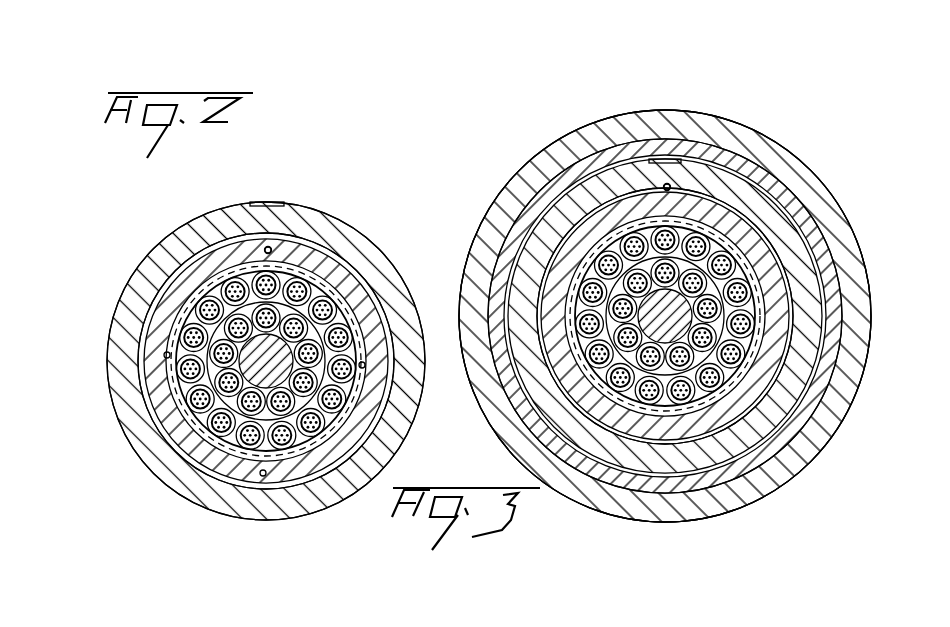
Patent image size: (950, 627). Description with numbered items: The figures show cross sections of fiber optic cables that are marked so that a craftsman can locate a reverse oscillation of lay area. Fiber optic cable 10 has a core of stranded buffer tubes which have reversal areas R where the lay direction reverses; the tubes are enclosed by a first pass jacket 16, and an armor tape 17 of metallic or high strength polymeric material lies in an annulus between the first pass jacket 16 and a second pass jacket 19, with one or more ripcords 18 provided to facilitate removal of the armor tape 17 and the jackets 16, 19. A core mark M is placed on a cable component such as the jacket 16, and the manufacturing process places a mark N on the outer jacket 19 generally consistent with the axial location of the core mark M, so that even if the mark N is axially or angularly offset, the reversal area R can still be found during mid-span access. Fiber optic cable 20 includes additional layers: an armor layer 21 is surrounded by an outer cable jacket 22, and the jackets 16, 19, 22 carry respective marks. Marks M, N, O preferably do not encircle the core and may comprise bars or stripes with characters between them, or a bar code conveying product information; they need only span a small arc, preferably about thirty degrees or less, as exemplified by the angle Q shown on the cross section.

In FIG. 2, the fiber optic cable 10 is at (343, 219).
In FIG. 2, the first pass jacket 16 is at (167, 337).
In FIG. 3, the first pass jacket 16 is at (570, 280).
In FIG. 2, the armor tape 17 is at (157, 308).
In FIG. 3, the armor tape 17 is at (562, 262).
In FIG. 2, the ripcord 18 is at (270, 247).
In FIG. 3, the ripcord 18 is at (668, 184).
In FIG. 2, the second pass jacket 19 is at (231, 211).
In FIG. 3, the second pass jacket 19 is at (622, 173).
In FIG. 3, the fiber optic cable 20 is at (535, 125).
In FIG. 3, the armor layer 21 is at (803, 212).
In FIG. 3, the cable jacket 22 is at (785, 160).
In FIG. 2, the mark N is at (266, 196).
In FIG. 3, the mark N is at (651, 150).
In FIG. 2, the core mark M is at (176, 291).
In FIG. 3, the core mark M is at (590, 238).
In FIG. 2, the reversal area R is at (284, 273).
In FIG. 3, the reversal area R is at (681, 222).
In FIG. 3, the mark O is at (763, 124).
In FIG. 2, the jacket thickness Q is at (145, 310).